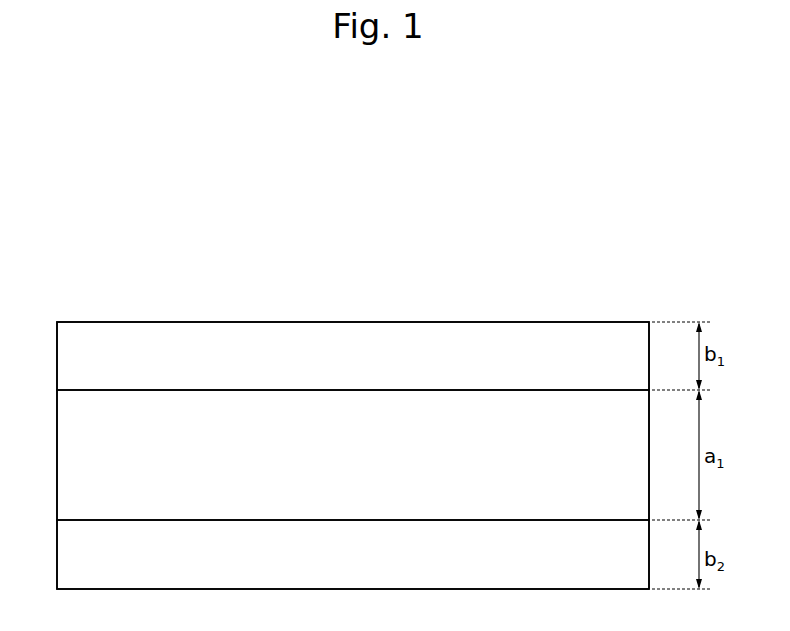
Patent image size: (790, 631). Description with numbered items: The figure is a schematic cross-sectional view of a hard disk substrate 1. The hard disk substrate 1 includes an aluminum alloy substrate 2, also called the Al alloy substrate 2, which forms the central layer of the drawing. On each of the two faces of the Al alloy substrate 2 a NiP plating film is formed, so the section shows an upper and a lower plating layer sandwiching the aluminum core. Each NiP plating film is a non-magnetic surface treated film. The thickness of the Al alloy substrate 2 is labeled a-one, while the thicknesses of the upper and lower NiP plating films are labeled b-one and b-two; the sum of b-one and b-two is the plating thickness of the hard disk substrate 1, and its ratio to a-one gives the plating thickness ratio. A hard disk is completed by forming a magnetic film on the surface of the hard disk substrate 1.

The hard disk substrate 1 is at (608, 220).
The aluminum alloy substrate 2 is at (90, 465).